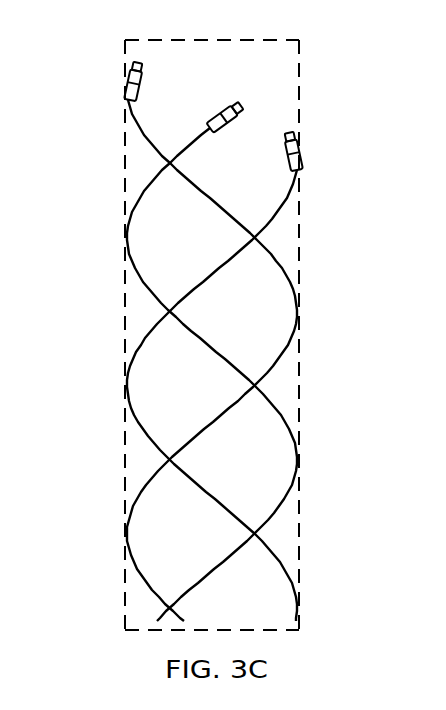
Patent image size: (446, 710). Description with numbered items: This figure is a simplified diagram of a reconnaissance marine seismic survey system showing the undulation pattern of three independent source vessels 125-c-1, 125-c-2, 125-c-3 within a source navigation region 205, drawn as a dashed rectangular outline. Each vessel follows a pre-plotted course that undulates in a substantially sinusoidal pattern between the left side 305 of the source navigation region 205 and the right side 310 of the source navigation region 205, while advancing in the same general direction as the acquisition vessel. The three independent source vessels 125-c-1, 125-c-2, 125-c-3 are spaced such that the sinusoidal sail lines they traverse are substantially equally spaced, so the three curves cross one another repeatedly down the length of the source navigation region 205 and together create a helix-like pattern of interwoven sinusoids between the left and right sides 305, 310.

The independent source vessel 125-c-1 is at (125, 83).
The independent source vessel 125-c-2 is at (224, 113).
The independent source vessel 125-c-3 is at (300, 152).
The source navigation region 205 is at (300, 60).
The left side 305 is at (125, 299).
The right side 310 is at (299, 296).